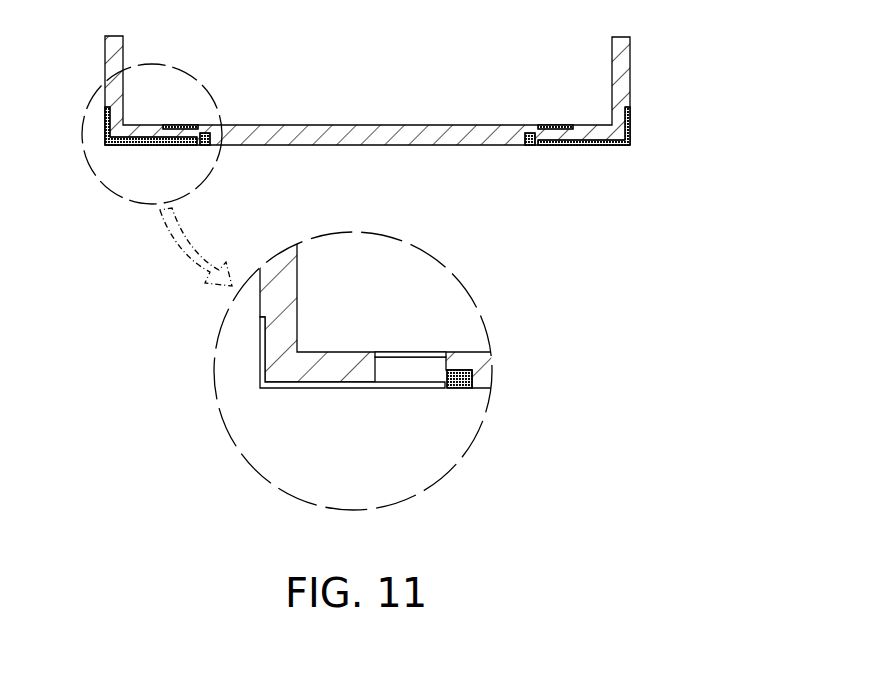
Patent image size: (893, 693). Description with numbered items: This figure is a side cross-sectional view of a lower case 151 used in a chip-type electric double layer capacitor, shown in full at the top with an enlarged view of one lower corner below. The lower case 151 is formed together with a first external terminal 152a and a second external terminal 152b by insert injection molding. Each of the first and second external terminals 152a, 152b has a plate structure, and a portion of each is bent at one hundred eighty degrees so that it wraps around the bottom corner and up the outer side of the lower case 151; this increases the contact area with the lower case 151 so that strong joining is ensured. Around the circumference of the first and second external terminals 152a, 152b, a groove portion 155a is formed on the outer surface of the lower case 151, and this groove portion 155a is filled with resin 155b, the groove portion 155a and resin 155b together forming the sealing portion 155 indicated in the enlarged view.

The lower case 151 is at (625, 72).
The first external terminal 152a is at (352, 390).
The second external terminal 152b is at (598, 147).
The sealing portion 155 is at (368, 256).
The groove portion 155a is at (460, 372).
The resin 155b is at (455, 357).